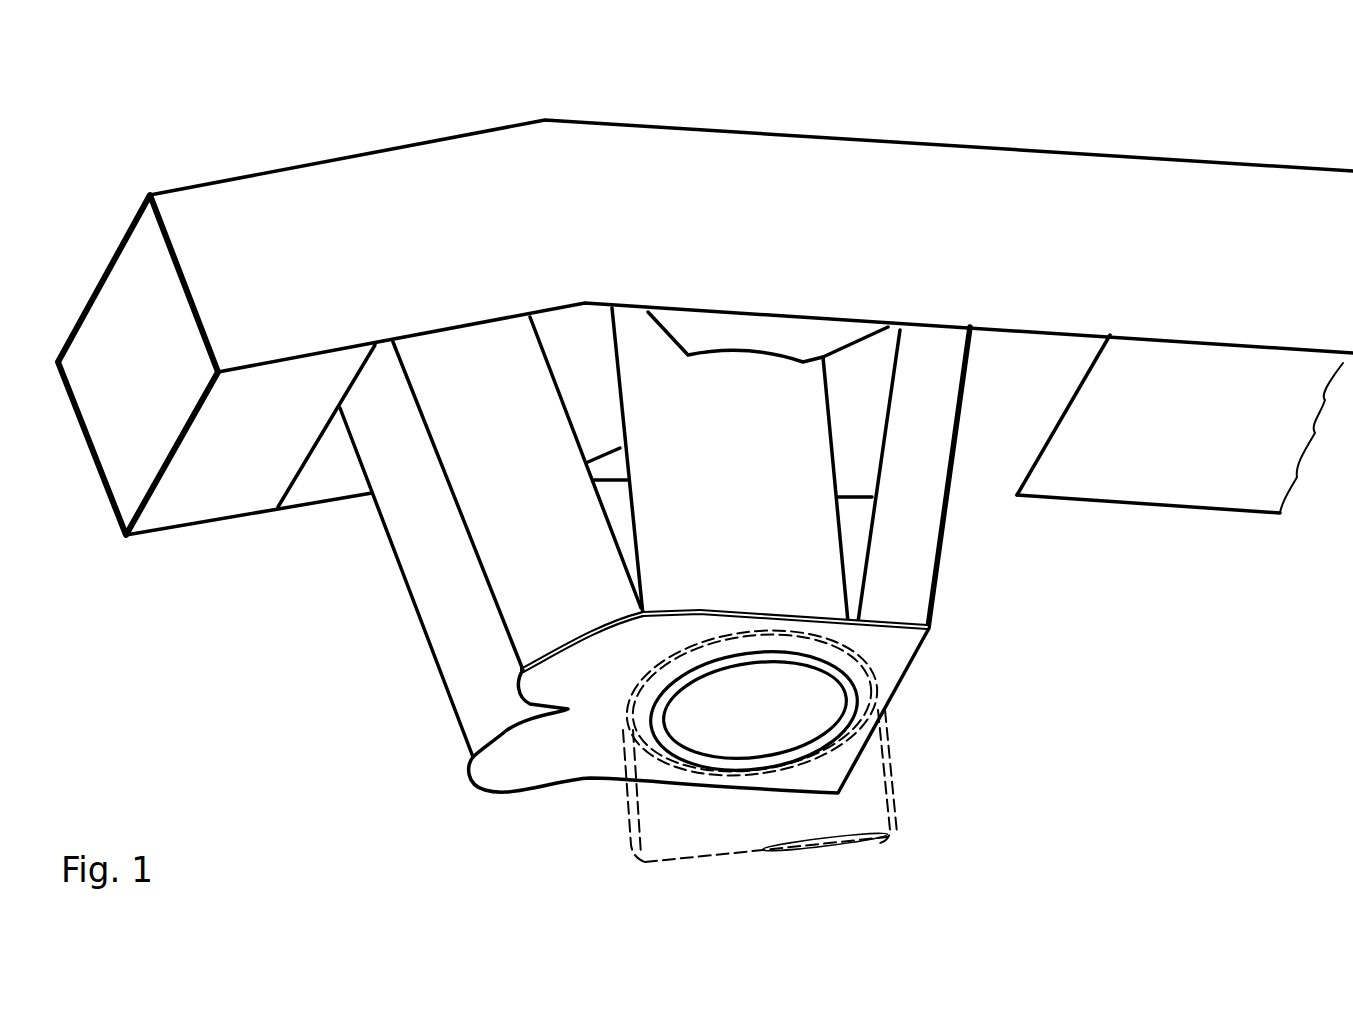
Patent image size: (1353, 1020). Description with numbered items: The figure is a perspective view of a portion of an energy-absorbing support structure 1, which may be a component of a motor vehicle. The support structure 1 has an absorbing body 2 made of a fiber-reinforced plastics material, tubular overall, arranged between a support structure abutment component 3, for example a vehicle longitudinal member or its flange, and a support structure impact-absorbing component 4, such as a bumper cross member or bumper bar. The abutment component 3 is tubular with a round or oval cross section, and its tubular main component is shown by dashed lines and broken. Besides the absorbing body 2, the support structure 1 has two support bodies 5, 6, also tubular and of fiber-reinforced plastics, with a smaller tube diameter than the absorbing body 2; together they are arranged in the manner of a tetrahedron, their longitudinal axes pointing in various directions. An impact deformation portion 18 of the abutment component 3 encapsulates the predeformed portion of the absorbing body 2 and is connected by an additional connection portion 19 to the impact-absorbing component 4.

The energy-absorbing support structure 1 is at (725, 129).
The absorbing body 2 is at (829, 399).
The support structure abutment component 3 is at (895, 790).
The support structure impact-absorbing component 4 is at (1094, 168).
The support body 5 is at (413, 560).
The support body 6 is at (502, 580).
The impact deformation portion 18 is at (897, 665).
The connection portion 19 is at (915, 575).